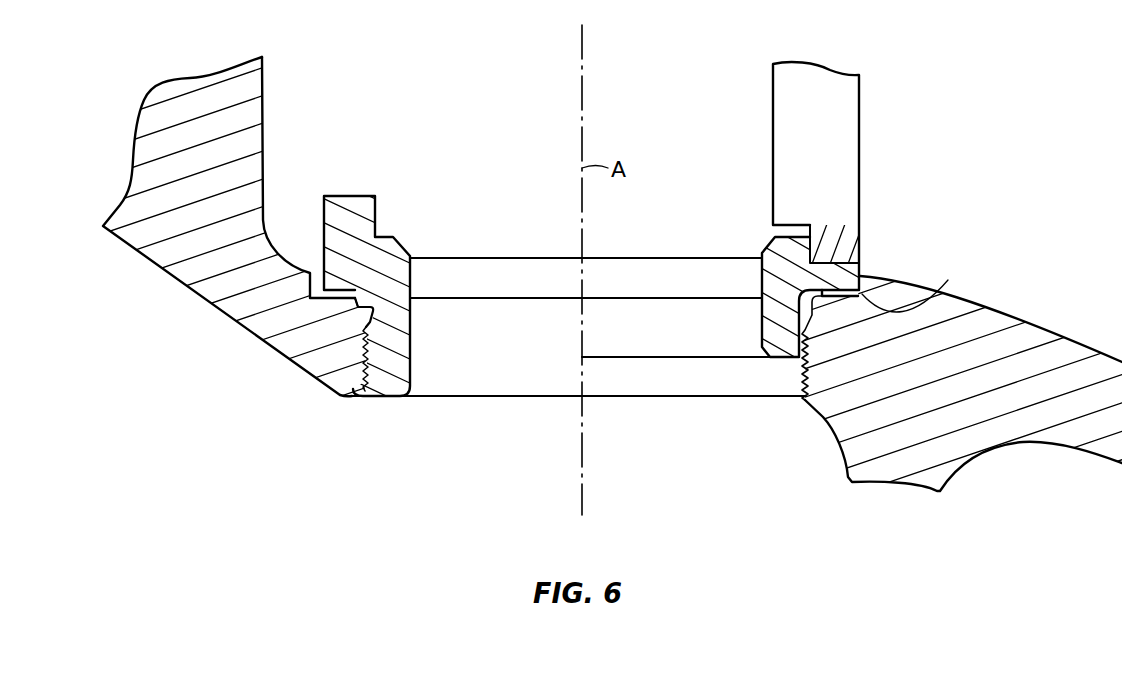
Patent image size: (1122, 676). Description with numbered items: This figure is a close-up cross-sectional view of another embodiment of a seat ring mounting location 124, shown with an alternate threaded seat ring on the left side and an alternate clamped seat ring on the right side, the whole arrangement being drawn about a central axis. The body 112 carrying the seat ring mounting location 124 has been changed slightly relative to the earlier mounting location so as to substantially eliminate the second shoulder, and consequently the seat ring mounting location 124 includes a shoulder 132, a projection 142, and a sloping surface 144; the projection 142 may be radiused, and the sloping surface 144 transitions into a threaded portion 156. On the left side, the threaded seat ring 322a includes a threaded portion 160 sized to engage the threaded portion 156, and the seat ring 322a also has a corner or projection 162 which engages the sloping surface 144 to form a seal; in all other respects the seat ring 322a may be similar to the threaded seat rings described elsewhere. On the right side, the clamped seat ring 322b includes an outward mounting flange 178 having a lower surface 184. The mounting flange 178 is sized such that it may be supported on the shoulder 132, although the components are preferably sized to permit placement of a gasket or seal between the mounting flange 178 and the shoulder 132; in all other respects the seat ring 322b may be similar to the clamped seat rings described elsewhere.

The hub body 112 is at (202, 270).
The shoulder 132 is at (312, 323).
The projection 142 is at (355, 325).
The sloping surface 144 is at (358, 316).
The threaded portion 156 is at (363, 360).
The threaded portion 160 is at (383, 358).
The corner or projection 162 is at (358, 305).
The threaded seat ring 322a is at (390, 390).
The clamped seat ring 322b is at (777, 343).
The lower surface 184 is at (817, 288).
The outward mounting flange 178 is at (835, 287).
The seat ring mounting location 124 is at (822, 311).